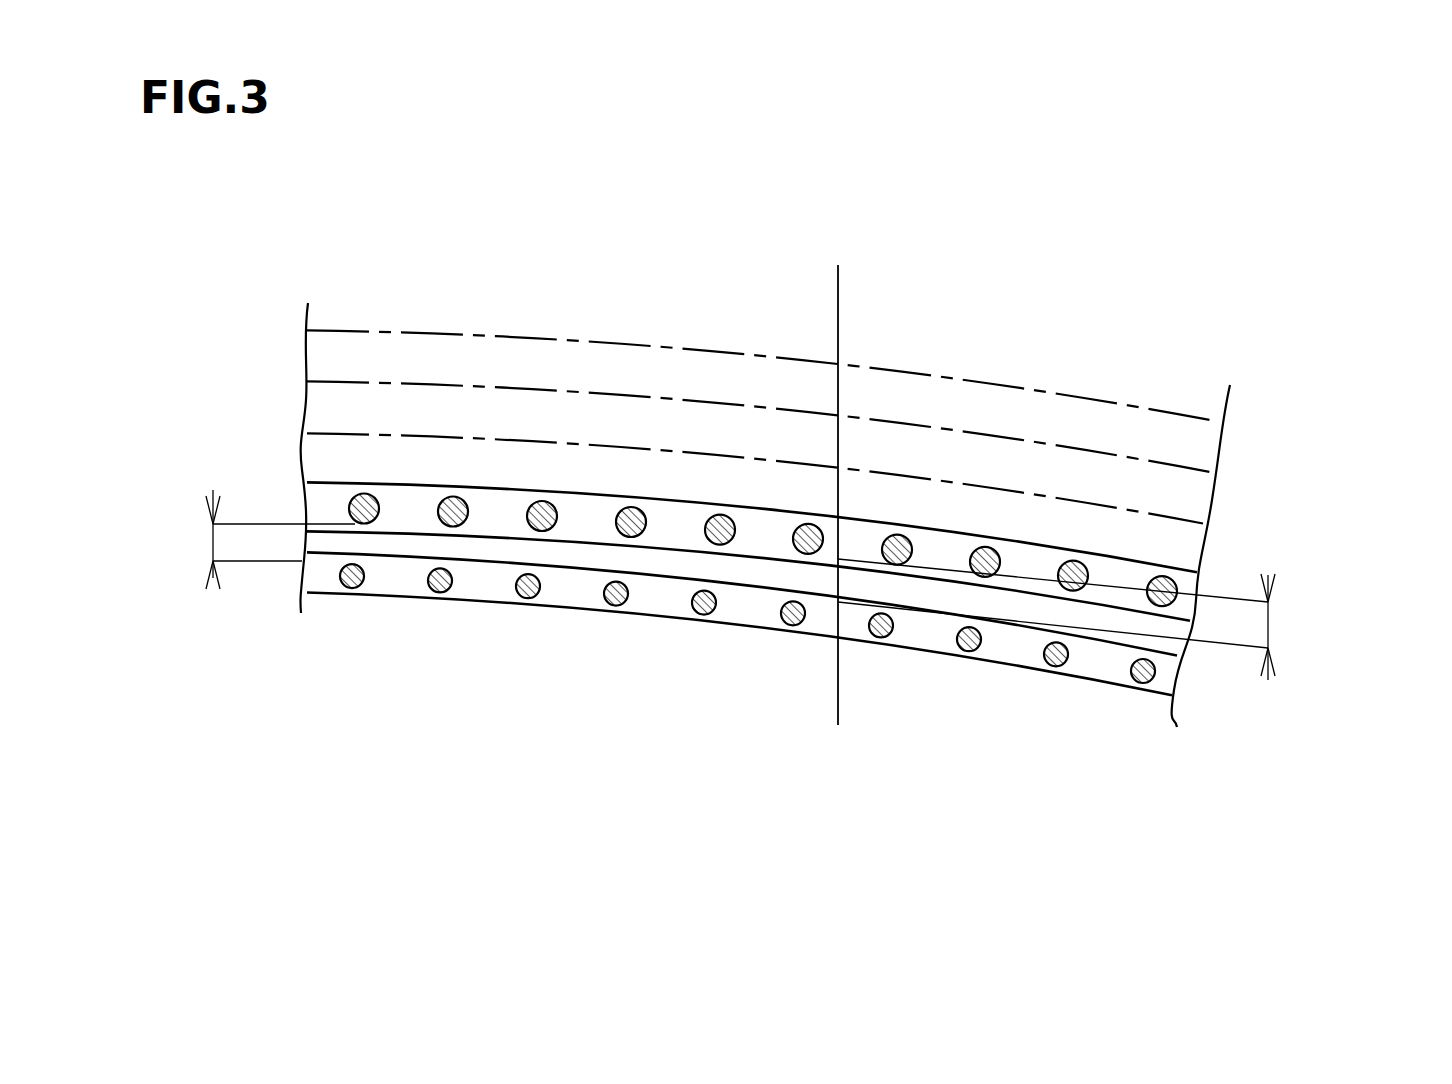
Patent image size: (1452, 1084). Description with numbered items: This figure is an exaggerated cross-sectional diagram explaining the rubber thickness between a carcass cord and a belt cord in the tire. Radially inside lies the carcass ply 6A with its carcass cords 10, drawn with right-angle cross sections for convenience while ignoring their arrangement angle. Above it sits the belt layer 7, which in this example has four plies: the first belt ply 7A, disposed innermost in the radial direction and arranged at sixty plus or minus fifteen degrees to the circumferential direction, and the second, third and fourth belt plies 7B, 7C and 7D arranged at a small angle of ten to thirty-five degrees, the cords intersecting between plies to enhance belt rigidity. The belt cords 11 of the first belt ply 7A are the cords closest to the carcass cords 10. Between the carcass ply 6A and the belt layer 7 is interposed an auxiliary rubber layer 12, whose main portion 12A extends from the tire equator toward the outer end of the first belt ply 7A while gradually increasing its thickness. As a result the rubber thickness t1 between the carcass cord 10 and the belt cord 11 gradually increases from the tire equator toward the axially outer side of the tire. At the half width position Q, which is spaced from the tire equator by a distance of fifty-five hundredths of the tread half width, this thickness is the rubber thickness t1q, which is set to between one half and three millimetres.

The belt layer 7 is at (822, 475).
The first belt ply 7A is at (797, 503).
The second belt ply 7B is at (1182, 538).
The third belt ply 7C is at (1192, 496).
The fourth belt ply 7D is at (1192, 446).
The belt cord 11 is at (358, 497).
The carcass cord 10 is at (352, 590).
The carcass ply 6A is at (739, 655).
The main portion 12A is at (800, 578).
The auxiliary rubber layer 12 is at (742, 666).
The half width position Q is at (839, 281).
The rubber thickness t1 is at (205, 540).
The rubber thickness at half width position t1q is at (1268, 622).